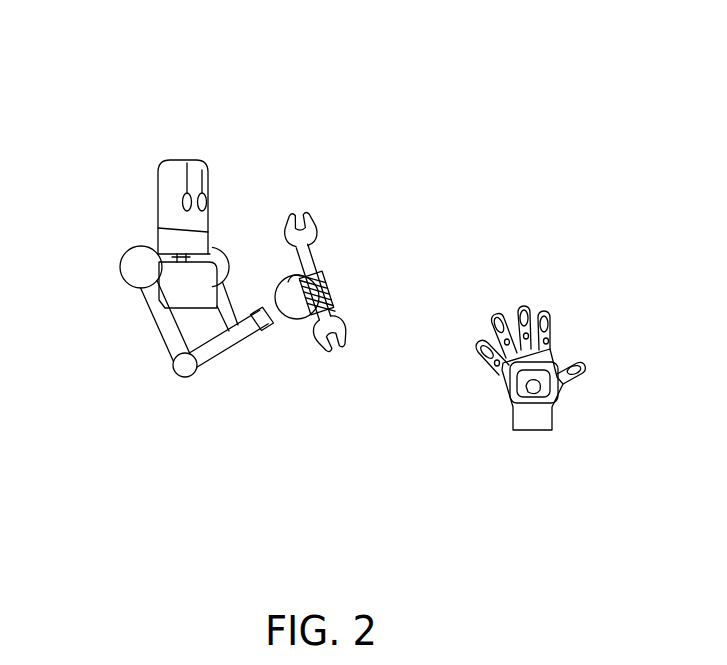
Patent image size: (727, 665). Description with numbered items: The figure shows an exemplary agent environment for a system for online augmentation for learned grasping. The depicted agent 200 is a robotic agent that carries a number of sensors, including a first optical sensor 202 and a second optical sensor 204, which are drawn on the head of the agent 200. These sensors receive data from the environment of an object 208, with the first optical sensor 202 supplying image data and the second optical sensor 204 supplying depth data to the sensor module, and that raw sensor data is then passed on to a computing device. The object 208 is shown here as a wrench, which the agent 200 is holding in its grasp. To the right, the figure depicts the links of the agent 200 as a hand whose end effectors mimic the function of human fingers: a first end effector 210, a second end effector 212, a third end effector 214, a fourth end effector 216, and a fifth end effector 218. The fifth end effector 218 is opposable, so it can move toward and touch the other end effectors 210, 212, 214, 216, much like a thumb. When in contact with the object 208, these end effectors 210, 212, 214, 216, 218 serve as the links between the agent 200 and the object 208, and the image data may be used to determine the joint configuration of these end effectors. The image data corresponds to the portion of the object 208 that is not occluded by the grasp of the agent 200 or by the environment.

The agent 200 is at (103, 50).
The first optical sensor 202 is at (187, 190).
The second optical sensor 204 is at (203, 190).
The object 208 is at (317, 222).
The first end effector 210 is at (487, 345).
The second end effector 212 is at (498, 320).
The third end effector 214 is at (523, 307).
The fourth end effector 216 is at (548, 312).
The fifth end effector 218 is at (583, 370).